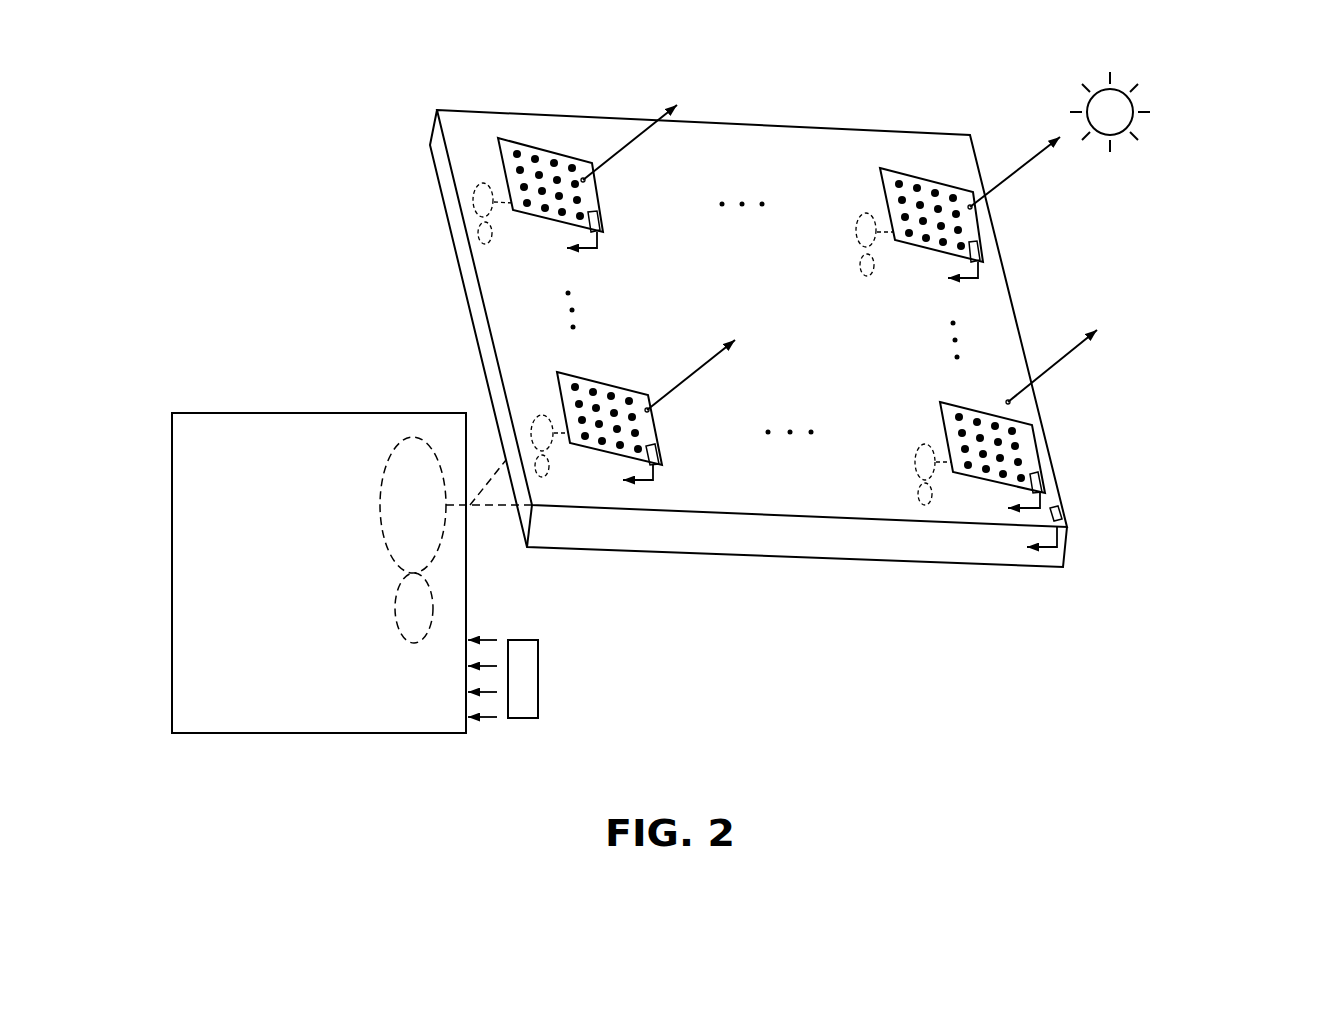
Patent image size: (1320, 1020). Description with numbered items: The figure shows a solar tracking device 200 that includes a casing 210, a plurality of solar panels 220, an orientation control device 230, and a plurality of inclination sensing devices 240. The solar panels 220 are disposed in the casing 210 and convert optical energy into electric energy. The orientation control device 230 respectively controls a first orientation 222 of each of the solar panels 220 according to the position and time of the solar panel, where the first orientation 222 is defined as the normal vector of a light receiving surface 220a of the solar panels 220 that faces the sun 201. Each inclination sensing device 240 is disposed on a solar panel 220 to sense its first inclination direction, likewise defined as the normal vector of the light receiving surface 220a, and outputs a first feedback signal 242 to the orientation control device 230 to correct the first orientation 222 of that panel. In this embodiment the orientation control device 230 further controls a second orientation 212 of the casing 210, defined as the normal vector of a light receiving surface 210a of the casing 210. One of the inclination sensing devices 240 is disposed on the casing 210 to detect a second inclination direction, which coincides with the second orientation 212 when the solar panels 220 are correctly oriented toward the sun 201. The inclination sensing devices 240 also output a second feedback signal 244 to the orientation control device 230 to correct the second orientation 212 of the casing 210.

The solar tracking device 200 is at (1145, 767).
The sun 201 is at (1118, 122).
The casing 210 is at (748, 304).
The light receiving surface of the casing 210a is at (810, 183).
The second orientation 212 is at (1057, 367).
The solar panels 220 is at (759, 272).
The light receiving surface of the solar panels 220a is at (892, 190).
The first orientation 222 is at (638, 142).
The orientation control device 230 is at (287, 413).
The inclination sensing devices 240 is at (602, 222).
The first feedback signal 242 is at (590, 250).
The second feedback signal 244 is at (488, 640).